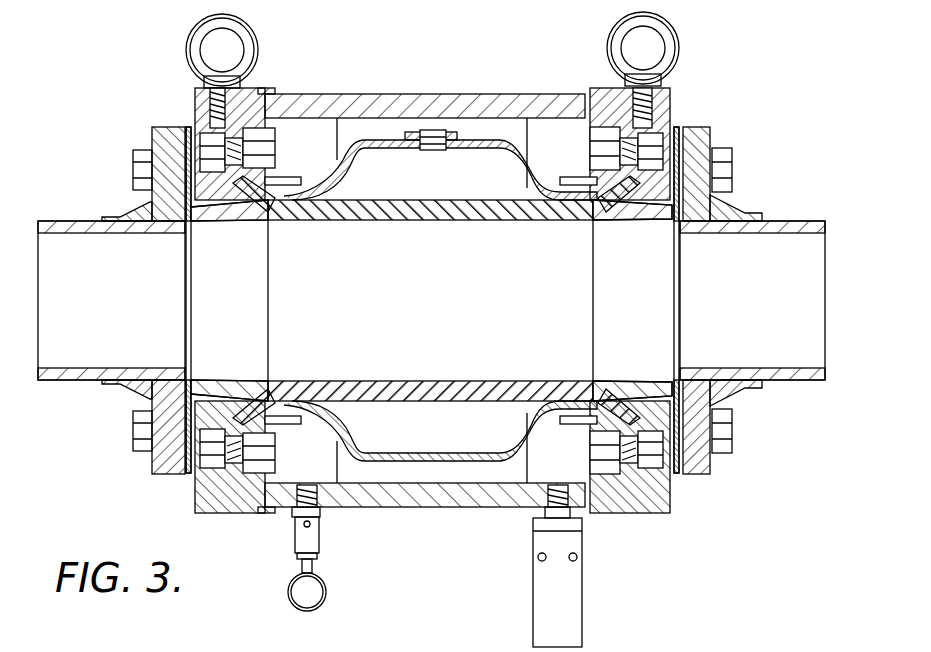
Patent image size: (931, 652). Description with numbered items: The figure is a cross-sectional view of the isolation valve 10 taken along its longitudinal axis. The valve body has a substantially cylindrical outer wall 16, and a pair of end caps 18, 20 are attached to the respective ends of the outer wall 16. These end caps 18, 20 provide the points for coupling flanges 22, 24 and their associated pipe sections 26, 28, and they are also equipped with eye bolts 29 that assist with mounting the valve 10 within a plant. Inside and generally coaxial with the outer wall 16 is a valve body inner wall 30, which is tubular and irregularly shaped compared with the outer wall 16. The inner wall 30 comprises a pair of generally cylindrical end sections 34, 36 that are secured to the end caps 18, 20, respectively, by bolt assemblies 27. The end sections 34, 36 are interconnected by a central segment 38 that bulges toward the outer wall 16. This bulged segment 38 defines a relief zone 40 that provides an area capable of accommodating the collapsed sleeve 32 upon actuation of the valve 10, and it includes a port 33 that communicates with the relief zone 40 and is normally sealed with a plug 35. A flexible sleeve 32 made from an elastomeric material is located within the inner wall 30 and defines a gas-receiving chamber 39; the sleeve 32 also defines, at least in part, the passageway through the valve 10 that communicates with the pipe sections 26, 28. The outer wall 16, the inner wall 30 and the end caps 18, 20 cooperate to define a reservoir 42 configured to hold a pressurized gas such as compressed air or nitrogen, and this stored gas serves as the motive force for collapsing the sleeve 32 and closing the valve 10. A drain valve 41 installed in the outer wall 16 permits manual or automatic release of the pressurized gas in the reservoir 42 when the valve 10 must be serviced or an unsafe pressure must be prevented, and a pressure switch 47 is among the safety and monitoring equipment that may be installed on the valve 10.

The valve 10 is at (134, 84).
The valve body outer wall 16 is at (348, 98).
The end cap 18 is at (660, 505).
The end cap 20 is at (195, 492).
The coupling flange 22 is at (703, 467).
The coupling flange 24 is at (170, 140).
The pipe section 26 is at (800, 222).
The bolt assembly 27 is at (655, 140).
The pipe section 28 is at (62, 222).
The eye bolt 29 is at (672, 50).
The valve body inner wall 30 is at (343, 165).
The flexible sleeve 32 is at (515, 218).
The port 33 is at (444, 130).
The end section 34 is at (565, 405).
The plug 35 is at (432, 130).
The end section 36 is at (303, 193).
The central segment 38 is at (490, 143).
The gas-receiving chamber 39 is at (431, 431).
The relief zone 40 is at (417, 179).
The drain valve 41 is at (320, 538).
The reservoir 42 is at (515, 467).
The pressure switch 47 is at (568, 605).